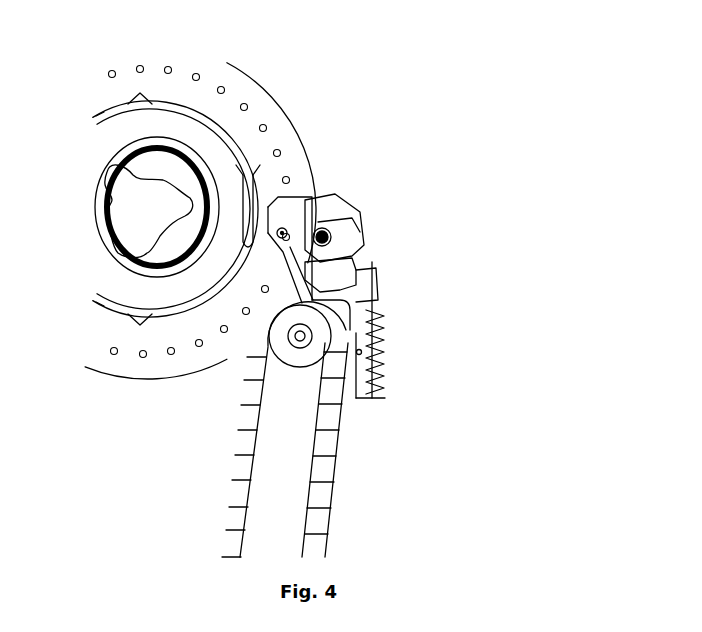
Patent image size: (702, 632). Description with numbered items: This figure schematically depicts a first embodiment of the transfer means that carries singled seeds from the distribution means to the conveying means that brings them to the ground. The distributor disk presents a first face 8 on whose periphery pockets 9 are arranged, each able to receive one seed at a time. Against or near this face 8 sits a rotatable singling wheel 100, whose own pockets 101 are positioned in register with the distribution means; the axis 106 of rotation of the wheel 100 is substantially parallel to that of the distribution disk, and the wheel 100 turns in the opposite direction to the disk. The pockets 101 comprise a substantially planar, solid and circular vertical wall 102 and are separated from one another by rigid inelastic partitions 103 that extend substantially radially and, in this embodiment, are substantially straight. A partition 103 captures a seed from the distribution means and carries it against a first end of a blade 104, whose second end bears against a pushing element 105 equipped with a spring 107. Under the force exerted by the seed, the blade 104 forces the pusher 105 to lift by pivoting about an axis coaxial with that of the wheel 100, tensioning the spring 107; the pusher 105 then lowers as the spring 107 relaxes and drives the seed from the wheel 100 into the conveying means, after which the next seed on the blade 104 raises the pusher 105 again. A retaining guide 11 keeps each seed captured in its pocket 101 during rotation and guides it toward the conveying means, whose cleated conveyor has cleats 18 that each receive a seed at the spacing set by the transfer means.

The first face 8 is at (125, 338).
The pockets 9 is at (220, 88).
The retaining guide 11 is at (268, 231).
The cleats 18 is at (313, 508).
The singling wheel 100 is at (375, 232).
The pockets 101 is at (352, 258).
The vertical wall 102 is at (318, 257).
The partitions 103 is at (335, 198).
The blade 104 is at (330, 287).
The pushing element 105 is at (375, 288).
The axis 106 is at (331, 232).
The spring 107 is at (375, 367).